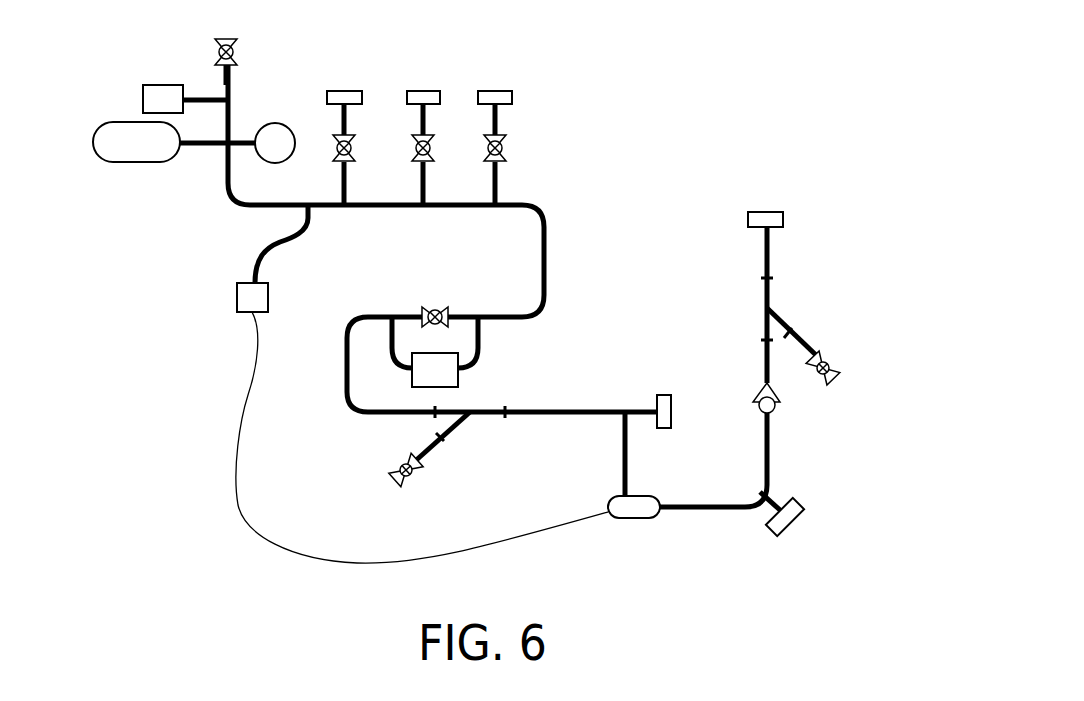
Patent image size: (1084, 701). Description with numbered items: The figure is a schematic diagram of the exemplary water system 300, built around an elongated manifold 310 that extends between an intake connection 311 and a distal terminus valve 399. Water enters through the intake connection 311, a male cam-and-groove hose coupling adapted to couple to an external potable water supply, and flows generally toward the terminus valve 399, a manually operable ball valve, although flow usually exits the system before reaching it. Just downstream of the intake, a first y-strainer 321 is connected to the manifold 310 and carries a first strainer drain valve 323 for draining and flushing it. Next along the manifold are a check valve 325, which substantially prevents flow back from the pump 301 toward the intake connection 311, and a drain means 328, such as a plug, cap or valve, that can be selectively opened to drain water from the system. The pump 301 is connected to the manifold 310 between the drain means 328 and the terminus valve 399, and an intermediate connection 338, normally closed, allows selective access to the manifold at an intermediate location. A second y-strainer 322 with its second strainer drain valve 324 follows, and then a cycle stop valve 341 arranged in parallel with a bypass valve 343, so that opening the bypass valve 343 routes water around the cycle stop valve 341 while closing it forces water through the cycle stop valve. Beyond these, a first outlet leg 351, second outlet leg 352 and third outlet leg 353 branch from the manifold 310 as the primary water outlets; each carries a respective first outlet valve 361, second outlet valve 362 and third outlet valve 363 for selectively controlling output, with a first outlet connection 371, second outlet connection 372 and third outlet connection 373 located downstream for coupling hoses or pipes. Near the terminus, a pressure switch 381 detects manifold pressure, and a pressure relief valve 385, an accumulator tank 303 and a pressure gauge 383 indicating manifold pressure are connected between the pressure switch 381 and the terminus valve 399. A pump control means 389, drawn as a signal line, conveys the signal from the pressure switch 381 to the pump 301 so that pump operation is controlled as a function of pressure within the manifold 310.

The water system 300 is at (630, 177).
The pump 301 is at (625, 518).
The accumulator tank 303 is at (157, 162).
The manifold 310 is at (385, 207).
The intake connection 311 is at (770, 212).
The first y-strainer 321 is at (784, 322).
The second y-strainer 322 is at (470, 425).
The first strainer drain valve 323 is at (840, 360).
The second strainer drain valve 324 is at (416, 478).
The check valve 325 is at (780, 400).
The drain means 328 is at (770, 535).
The intermediate connection 338 is at (660, 428).
The cycle stop valve 341 is at (460, 380).
The bypass valve 343 is at (440, 308).
The first outlet leg 351 is at (496, 190).
The second outlet leg 352 is at (424, 190).
The third outlet leg 353 is at (345, 190).
The first outlet valve 361 is at (506, 148).
The second outlet valve 362 is at (434, 148).
The third outlet valve 363 is at (355, 148).
The first outlet connection 371 is at (492, 90).
The second outlet connection 372 is at (420, 90).
The third outlet connection 373 is at (340, 90).
The pressure switch 381 is at (237, 297).
The pressure gauge 383 is at (255, 123).
The pressure relief valve 385 is at (157, 85).
The pump control means 389 is at (233, 422).
The terminus valve 399 is at (237, 50).